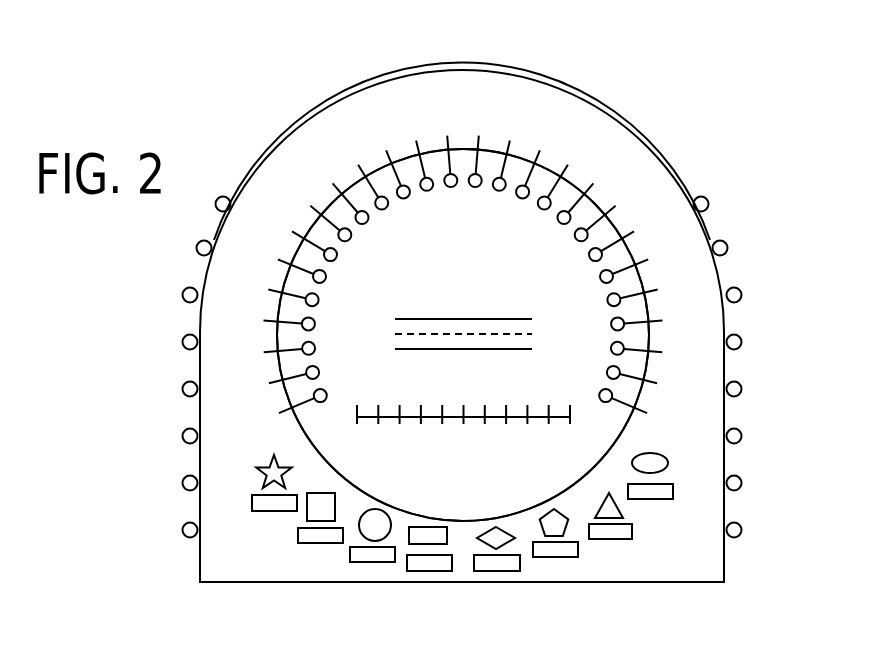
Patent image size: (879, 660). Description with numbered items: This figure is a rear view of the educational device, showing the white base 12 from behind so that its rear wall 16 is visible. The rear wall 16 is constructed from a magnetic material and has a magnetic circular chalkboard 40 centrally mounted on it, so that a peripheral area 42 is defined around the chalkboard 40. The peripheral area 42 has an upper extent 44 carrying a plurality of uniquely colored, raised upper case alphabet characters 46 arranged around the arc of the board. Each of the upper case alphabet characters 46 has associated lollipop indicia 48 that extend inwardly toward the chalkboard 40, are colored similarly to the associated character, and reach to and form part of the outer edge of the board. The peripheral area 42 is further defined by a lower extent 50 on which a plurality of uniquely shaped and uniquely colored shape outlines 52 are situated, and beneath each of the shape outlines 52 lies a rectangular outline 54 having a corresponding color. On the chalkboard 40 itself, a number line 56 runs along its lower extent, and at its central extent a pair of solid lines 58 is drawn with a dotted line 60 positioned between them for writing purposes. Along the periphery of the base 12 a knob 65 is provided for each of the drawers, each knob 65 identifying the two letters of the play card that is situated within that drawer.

The white base 12 is at (680, 182).
The rear wall 16 is at (643, 170).
The magnetic circular chalkboard 40 is at (520, 238).
The peripheral area 42 is at (332, 118).
The upper extent 44 is at (438, 88).
The upper case alphabet characters 46 is at (490, 107).
The lollipop indicia 48 is at (325, 213).
The lower extent 50 is at (308, 455).
The shape outlines 52 is at (360, 528).
The rectangular outline 54 is at (372, 557).
The number line 56 is at (570, 417).
The solid lines 58 is at (410, 319).
The dotted line 60 is at (400, 334).
The knob 65 is at (743, 336).